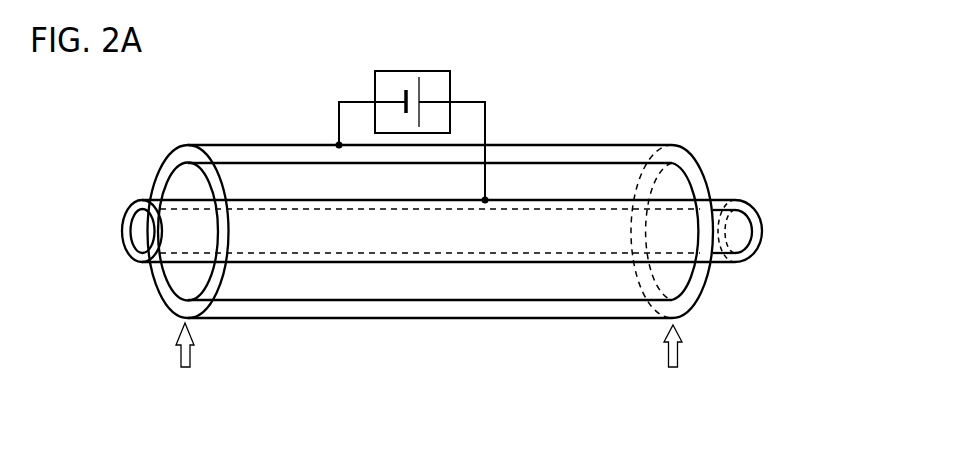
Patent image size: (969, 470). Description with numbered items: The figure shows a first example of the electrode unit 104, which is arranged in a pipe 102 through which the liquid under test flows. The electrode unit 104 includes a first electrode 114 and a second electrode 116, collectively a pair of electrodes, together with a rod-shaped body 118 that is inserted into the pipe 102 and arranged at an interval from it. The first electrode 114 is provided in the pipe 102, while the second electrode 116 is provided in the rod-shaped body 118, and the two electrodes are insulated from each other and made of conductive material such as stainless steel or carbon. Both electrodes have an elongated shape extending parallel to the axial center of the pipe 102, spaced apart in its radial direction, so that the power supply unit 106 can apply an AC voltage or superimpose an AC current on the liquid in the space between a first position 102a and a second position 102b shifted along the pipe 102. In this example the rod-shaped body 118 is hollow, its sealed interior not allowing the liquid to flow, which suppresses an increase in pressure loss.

The pipe 102 is at (666, 146).
The first position 102a is at (186, 361).
The second position 102b is at (673, 362).
The electrode unit 104 is at (452, 390).
The power supply unit 106 is at (441, 71).
The first electrode 114 is at (563, 168).
The second electrode 116 is at (575, 235).
The rod-shaped body 118 is at (737, 262).